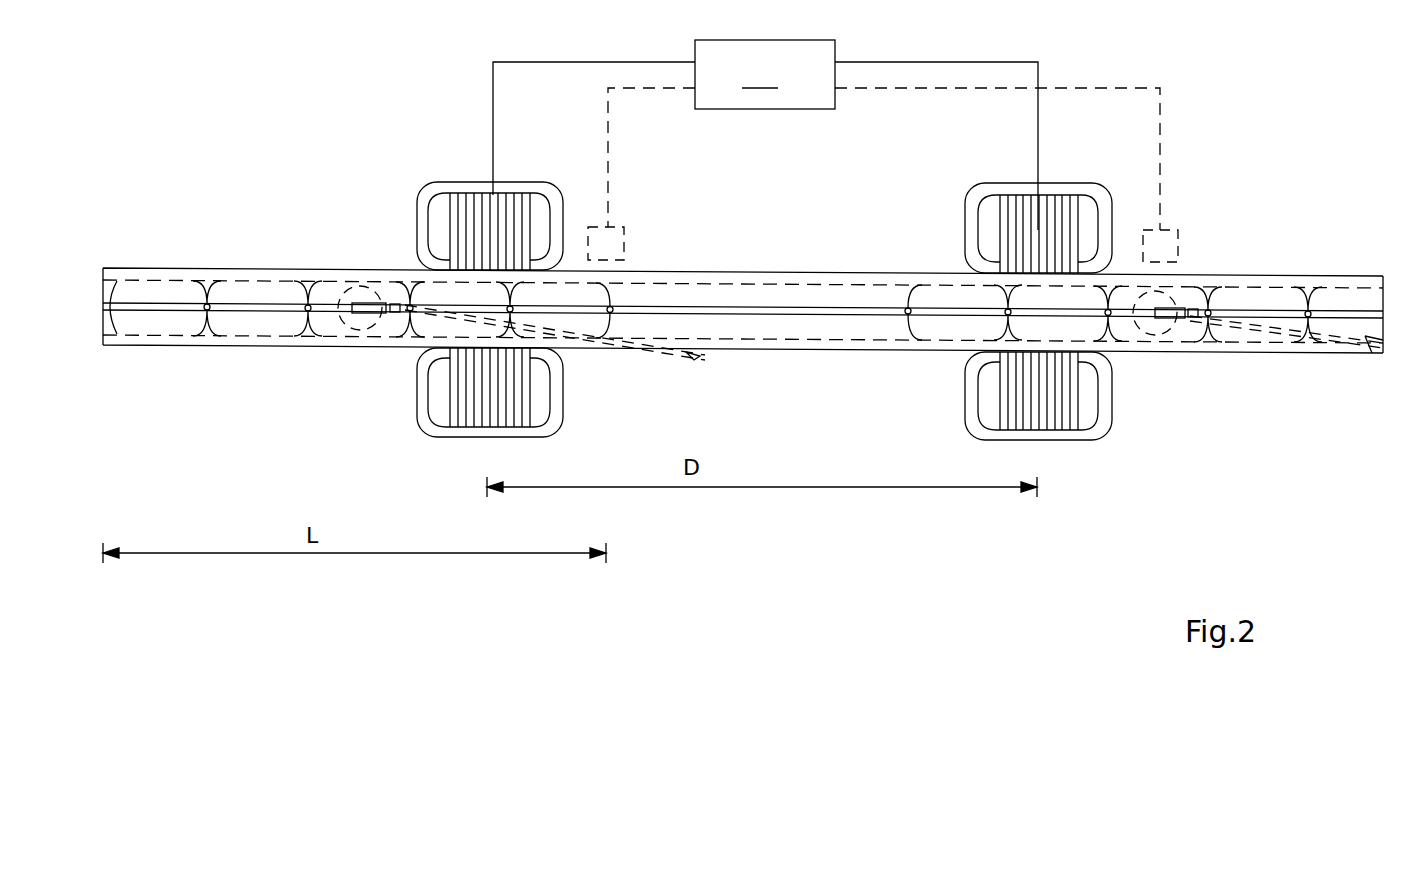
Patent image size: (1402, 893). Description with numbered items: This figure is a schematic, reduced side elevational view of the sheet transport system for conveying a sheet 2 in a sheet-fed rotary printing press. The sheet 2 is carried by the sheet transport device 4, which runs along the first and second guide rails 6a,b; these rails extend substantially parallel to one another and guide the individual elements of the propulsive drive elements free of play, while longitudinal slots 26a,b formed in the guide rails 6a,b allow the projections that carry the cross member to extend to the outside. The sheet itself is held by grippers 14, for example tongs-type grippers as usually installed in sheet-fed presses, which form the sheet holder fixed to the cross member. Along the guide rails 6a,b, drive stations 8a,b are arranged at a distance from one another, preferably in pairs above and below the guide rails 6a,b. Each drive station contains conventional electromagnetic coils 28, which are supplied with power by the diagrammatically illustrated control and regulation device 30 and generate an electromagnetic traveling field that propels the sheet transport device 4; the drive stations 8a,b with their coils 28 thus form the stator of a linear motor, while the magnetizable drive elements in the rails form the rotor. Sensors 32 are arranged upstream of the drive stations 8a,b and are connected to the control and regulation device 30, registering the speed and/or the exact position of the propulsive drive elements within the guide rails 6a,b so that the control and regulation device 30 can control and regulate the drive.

The sheet 2 is at (690, 355).
The sheet transport device 4 is at (245, 297).
The first and second guide rails 6a,b is at (880, 330).
The drive stations 8a,b is at (432, 203).
The grippers 14 is at (1188, 318).
The longitudinal slots 26a,b is at (765, 312).
The electromagnetic coils 28 is at (1030, 228).
The control and regulation device 30 is at (765, 135).
The sensors 32 is at (612, 242).